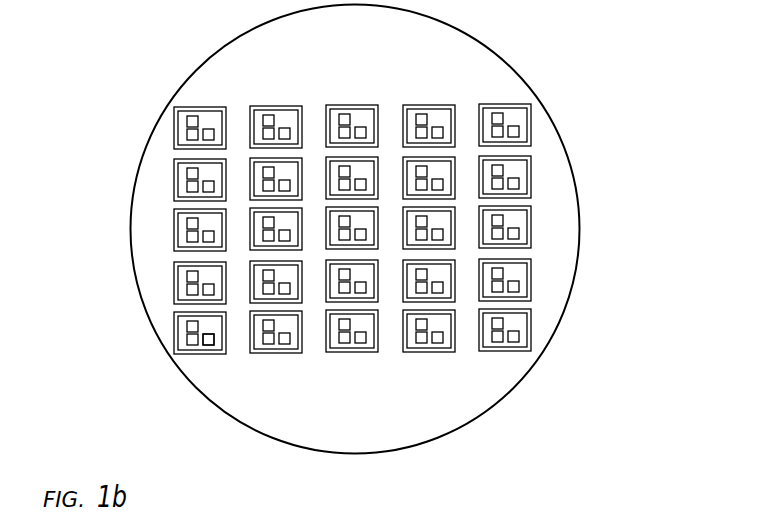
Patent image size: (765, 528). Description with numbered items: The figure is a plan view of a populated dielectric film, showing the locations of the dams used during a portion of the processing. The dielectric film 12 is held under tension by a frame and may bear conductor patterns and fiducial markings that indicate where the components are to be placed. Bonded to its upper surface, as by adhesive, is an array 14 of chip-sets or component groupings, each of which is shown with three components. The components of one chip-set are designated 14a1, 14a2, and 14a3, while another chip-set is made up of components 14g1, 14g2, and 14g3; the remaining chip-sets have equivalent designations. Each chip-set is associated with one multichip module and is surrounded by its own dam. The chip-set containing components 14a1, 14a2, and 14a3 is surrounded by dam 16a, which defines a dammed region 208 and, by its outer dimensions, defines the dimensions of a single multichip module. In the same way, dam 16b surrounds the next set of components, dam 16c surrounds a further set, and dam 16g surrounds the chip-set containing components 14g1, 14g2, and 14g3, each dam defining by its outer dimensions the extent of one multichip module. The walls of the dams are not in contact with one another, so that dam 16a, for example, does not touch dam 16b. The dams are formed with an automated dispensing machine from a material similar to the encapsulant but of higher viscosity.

The dielectric film 12 is at (563, 312).
The array of chip-sets 14 is at (301, 257).
The component of chip set 14a 14a1 is at (199, 323).
The component of chip set 14a 14a2 is at (194, 348).
The component of chip set 14a 14a3 is at (209, 348).
The component of chip set 14g 14g1 is at (262, 174).
The component of chip set 14g 14g2 is at (270, 192).
The component of chip set 14g 14g3 is at (290, 187).
The dam 16a is at (172, 373).
The dam 16b is at (174, 290).
The dam 16c is at (174, 238).
The dam 16g is at (291, 140).
The dammed region 208 is at (215, 348).